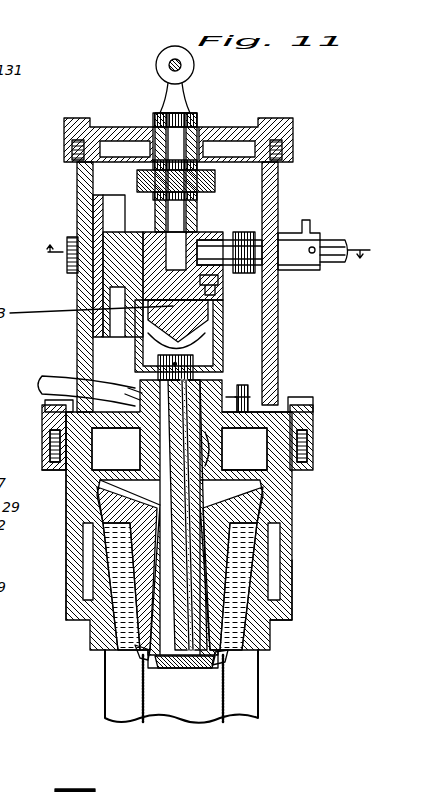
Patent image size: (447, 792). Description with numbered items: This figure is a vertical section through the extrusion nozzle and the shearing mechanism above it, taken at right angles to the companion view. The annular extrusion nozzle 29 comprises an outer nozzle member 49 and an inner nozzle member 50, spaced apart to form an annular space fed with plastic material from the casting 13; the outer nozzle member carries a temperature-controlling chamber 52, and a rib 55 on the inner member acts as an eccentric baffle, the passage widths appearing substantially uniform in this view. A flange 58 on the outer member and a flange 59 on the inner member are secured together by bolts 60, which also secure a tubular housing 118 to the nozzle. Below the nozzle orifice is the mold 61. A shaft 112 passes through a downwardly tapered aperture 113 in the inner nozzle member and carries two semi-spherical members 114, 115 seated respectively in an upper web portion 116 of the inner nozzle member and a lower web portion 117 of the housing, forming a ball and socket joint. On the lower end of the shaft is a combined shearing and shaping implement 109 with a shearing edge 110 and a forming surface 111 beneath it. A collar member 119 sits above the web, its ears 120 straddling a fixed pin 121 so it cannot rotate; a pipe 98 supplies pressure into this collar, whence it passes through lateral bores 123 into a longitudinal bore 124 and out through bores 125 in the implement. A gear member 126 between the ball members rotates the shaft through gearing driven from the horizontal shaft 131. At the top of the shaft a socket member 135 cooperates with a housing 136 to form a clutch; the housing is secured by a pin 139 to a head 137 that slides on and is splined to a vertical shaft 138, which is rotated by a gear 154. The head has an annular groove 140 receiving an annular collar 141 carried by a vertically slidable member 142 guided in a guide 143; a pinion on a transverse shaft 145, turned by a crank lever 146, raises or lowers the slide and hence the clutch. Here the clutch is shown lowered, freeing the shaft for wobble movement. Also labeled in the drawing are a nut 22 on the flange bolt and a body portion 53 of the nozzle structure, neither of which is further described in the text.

The horizontal shaft 131 is at (169, 65).
The gear 154 is at (290, 137).
The annular groove 140 is at (195, 213).
The vertical shaft 138 is at (168, 217).
The guide 143 is at (100, 196).
The vertically slidable member 142 is at (112, 258).
The head 137 is at (44, 255).
The casting 13 is at (207, 251).
The tubular housing 118 is at (273, 300).
The annular collar 141 is at (218, 247).
The transverse shaft 145 is at (337, 235).
The crank lever 146 is at (305, 224).
The pin 139 is at (230, 287).
The housing 136 is at (135, 322).
The socket member 135 is at (200, 320).
The lateral bores 123 is at (158, 362).
The collar member 119 is at (232, 385).
The ears 120 is at (247, 377).
The lower web portion 117 is at (227, 397).
The pipe 98 is at (58, 383).
The nut 22 is at (45, 403).
The bolts 60 is at (302, 397).
The flange 59 is at (43, 435).
The flange 58 is at (52, 468).
The fixed pin 121 is at (315, 412).
The body 53 is at (197, 515).
The upper web portion 116 is at (247, 480).
The longitudinal bore 124 is at (233, 497).
The annular extrusion nozzle 29 is at (77, 518).
The chamber 52 is at (268, 585).
The semi-spherical member 115 is at (182, 432).
The semi-spherical member 114 is at (210, 462).
The gear member 126 is at (210, 443).
The rib 55 is at (233, 553).
The outer nozzle member 49 is at (127, 603).
The shaft 112 is at (120, 560).
The inner nozzle member 50 is at (128, 580).
The downwardly tapered aperture 113 is at (170, 622).
The mold 61 is at (110, 698).
The bores 125 is at (178, 667).
The forming surface 111 is at (227, 670).
The combined shearing and shaping implement 109 is at (195, 673).
The shearing edge 110 is at (230, 657).